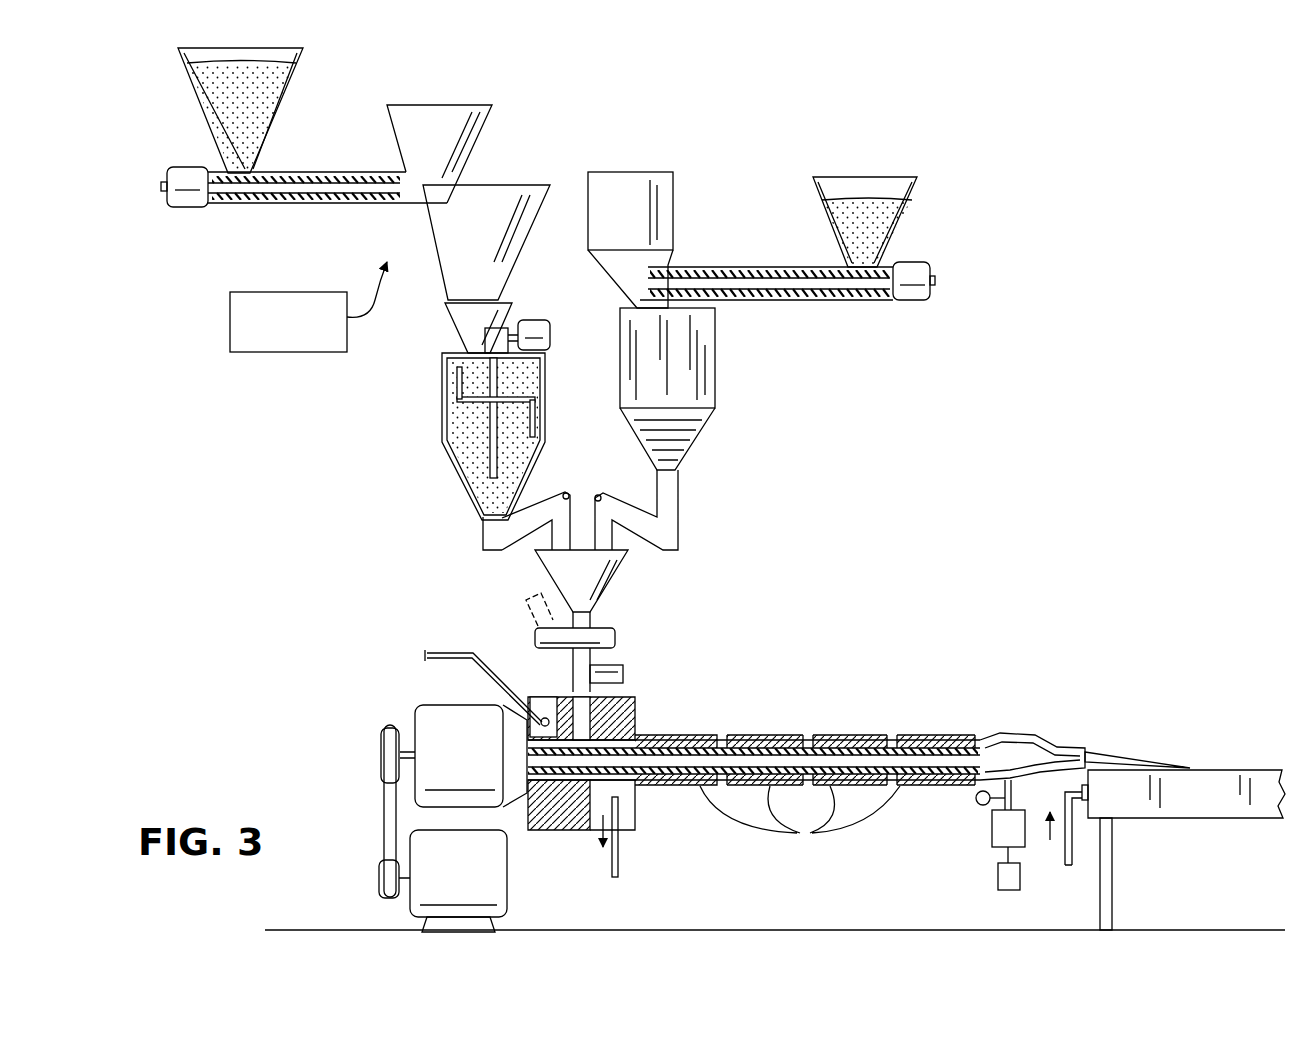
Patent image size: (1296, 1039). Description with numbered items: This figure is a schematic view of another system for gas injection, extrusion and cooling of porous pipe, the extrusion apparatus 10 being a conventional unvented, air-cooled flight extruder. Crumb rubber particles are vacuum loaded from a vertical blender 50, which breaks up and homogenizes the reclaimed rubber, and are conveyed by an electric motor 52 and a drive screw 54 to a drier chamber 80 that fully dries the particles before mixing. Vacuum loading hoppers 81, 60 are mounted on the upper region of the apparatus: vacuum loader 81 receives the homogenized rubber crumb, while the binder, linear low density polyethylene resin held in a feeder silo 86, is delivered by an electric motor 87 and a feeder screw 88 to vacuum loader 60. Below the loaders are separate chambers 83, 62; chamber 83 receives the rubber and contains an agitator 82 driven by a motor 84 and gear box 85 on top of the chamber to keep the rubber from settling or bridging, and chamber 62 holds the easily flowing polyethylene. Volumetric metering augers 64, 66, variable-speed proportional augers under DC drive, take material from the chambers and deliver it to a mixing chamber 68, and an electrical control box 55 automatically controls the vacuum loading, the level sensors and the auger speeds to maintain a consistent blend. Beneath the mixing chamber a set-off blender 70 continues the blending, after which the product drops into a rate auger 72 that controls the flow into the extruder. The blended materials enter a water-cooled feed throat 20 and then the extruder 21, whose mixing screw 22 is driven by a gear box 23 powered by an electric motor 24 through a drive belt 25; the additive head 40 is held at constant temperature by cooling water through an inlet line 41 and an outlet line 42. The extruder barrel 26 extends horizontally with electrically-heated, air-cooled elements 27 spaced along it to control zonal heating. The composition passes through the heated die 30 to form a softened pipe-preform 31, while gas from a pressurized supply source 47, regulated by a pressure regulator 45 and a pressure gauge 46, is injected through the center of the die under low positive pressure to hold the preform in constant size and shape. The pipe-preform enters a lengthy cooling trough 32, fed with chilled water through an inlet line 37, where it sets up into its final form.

The extrusion apparatus 10 is at (268, 616).
The feed throat 20 is at (562, 695).
The extruder 21 is at (548, 720).
The mixing screw 22 is at (685, 750).
The gear box 23 is at (450, 705).
The electric motor 24 is at (507, 880).
The drive belt 25 is at (384, 830).
The extruder barrel 26 is at (838, 738).
The air-cooled elements 27 is at (800, 825).
The die 30 is at (1015, 737).
The pipe-preform 31 is at (1092, 756).
The cooling trough 32 is at (1202, 808).
The inlet line 37 is at (1068, 860).
The additive head 40 is at (640, 703).
The inlet line 41 is at (428, 652).
The outlet line 42 is at (620, 855).
The pressure regulator 45 is at (992, 836).
The pressure gauge 46 is at (975, 800).
The pressurized supply source 47 is at (998, 875).
The vertical blender 50 is at (200, 117).
The electric motor 52 is at (185, 210).
The drive screw 54 is at (325, 175).
The electrical control box 55 is at (303, 292).
The vacuum loading hopper 60 is at (665, 222).
The chamber 62 is at (718, 370).
The volumetric metering auger 64 is at (553, 492).
The volumetric metering auger 66 is at (607, 502).
The mixing chamber 68 is at (620, 582).
The set-off blender 70 is at (535, 640).
The rate auger 72 is at (615, 667).
The drier chamber 80 is at (490, 140).
The vacuum loading hopper 81 is at (505, 255).
The agitator 82 is at (470, 402).
The chamber 83 is at (462, 488).
The motor 84 is at (540, 326).
The gear box 85 is at (492, 336).
The feeder silo 86 is at (917, 215).
The electric motor 87 is at (915, 300).
The feeder screw 88 is at (802, 300).